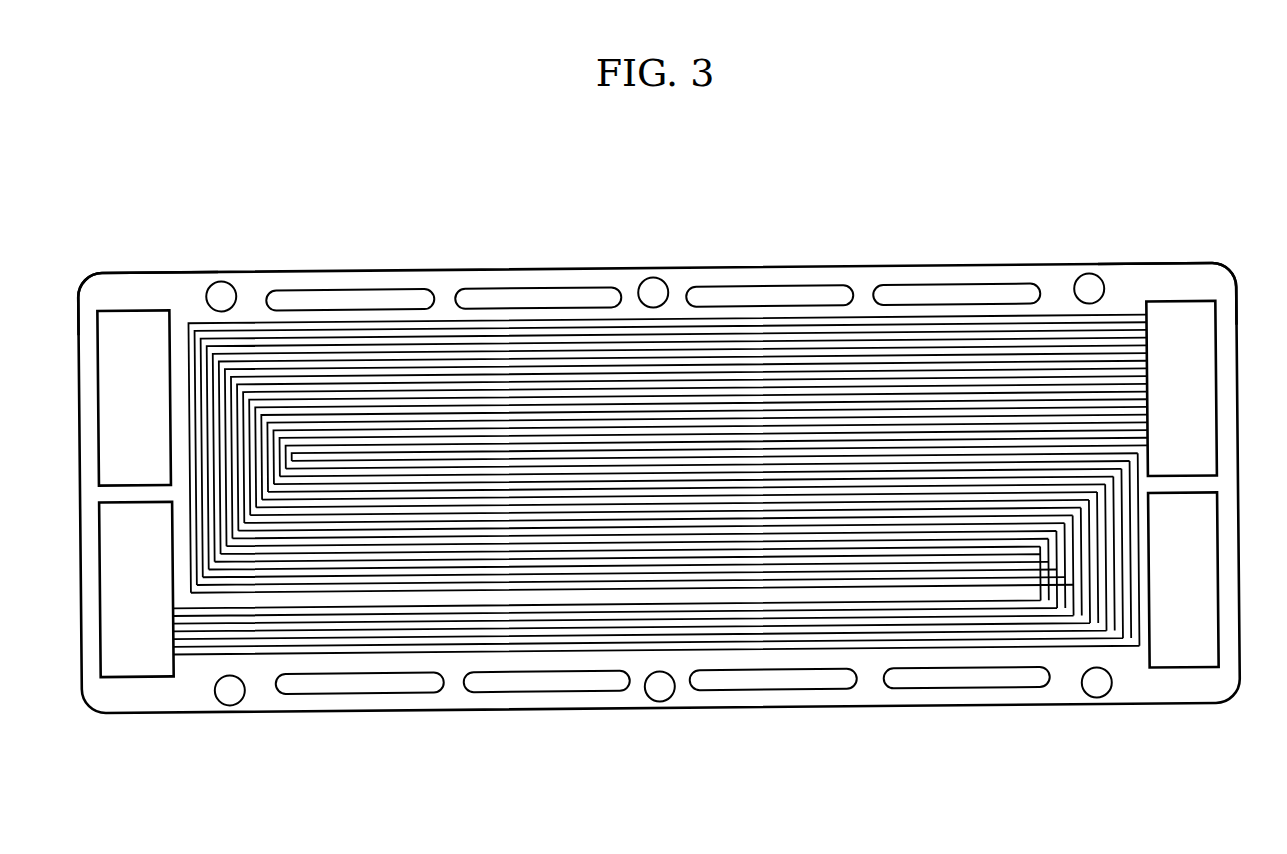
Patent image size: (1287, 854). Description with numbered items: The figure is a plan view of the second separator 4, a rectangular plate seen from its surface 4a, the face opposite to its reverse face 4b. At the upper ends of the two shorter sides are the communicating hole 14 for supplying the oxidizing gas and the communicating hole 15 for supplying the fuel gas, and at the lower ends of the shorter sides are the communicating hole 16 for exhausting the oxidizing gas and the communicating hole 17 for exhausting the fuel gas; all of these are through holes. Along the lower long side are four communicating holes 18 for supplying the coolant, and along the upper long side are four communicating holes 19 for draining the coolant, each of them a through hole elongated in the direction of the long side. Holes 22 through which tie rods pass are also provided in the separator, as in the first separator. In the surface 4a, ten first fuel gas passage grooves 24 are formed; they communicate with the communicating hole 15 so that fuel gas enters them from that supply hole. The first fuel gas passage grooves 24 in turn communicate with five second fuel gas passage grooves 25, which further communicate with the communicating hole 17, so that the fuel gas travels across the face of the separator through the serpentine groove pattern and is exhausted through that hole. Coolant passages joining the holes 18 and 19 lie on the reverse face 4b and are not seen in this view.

The second separator 4 is at (834, 226).
The surface of the second separator 4a is at (1141, 268).
The reverse face of the second separator 4b is at (172, 284).
The communicating hole for supplying the oxidizing gas 14 is at (115, 374).
The communicating hole for supplying the fuel gas 15 is at (1198, 378).
The communicating hole for exhausting the oxidizing gas 16 is at (1203, 544).
The communicating hole for exhausting the fuel gas 17 is at (118, 571).
The communicating holes for supplying the coolant 18 is at (361, 681).
The communicating holes for draining the coolant 19 is at (333, 296).
The holes through which tie rods pass 22 is at (655, 279).
The first fuel gas passage grooves 24 is at (1052, 336).
The second fuel gas passage grooves 25 is at (872, 634).